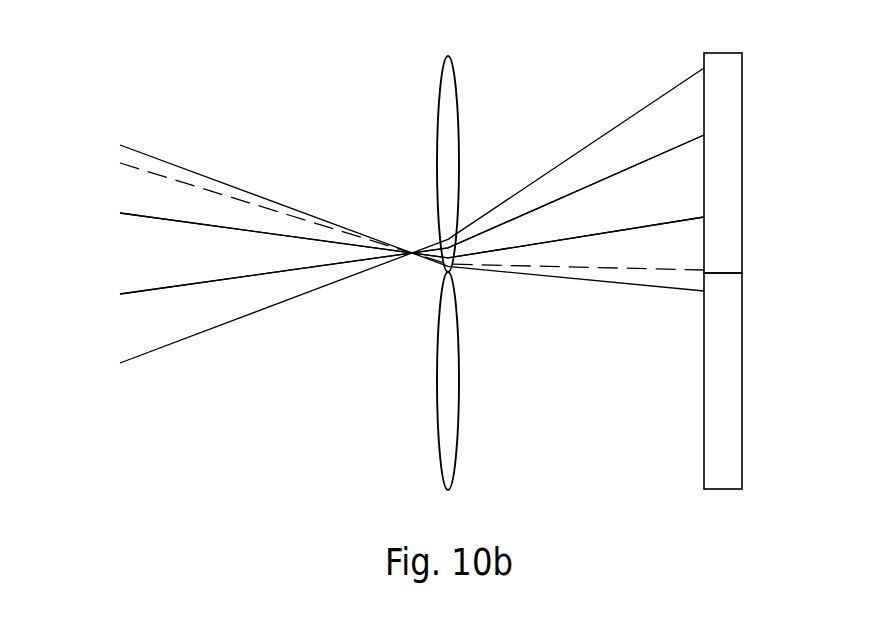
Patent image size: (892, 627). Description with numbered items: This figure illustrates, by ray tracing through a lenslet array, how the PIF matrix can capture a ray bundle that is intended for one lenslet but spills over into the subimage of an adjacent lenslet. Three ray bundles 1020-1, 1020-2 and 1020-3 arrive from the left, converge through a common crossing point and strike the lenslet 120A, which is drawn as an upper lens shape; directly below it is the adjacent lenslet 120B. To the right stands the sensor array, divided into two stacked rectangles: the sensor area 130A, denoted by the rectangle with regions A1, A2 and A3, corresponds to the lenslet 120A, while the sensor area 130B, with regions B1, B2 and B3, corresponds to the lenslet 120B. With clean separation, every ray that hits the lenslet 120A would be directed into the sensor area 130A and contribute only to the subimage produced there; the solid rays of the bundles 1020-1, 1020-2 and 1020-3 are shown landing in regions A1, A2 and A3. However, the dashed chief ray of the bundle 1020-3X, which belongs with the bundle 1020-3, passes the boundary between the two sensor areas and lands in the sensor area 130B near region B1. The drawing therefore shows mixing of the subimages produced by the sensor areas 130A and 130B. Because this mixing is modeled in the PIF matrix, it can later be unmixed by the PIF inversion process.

The ray bundle 1020-3X is at (172, 181).
The ray bundle 1020-3 is at (392, 218).
The ray bundle 1020-2 is at (392, 214).
The ray bundle 1020-1 is at (392, 215).
The lenslet 120A is at (419, 164).
The lenslet 120B is at (419, 381).
The sensor area 130A is at (753, 163).
The sensor area 130B is at (753, 381).
The region A1 is at (721, 94).
The region A2 is at (721, 162).
The region A3 is at (721, 231).
The region B1 is at (721, 312).
The region B2 is at (721, 381).
The region B3 is at (721, 449).